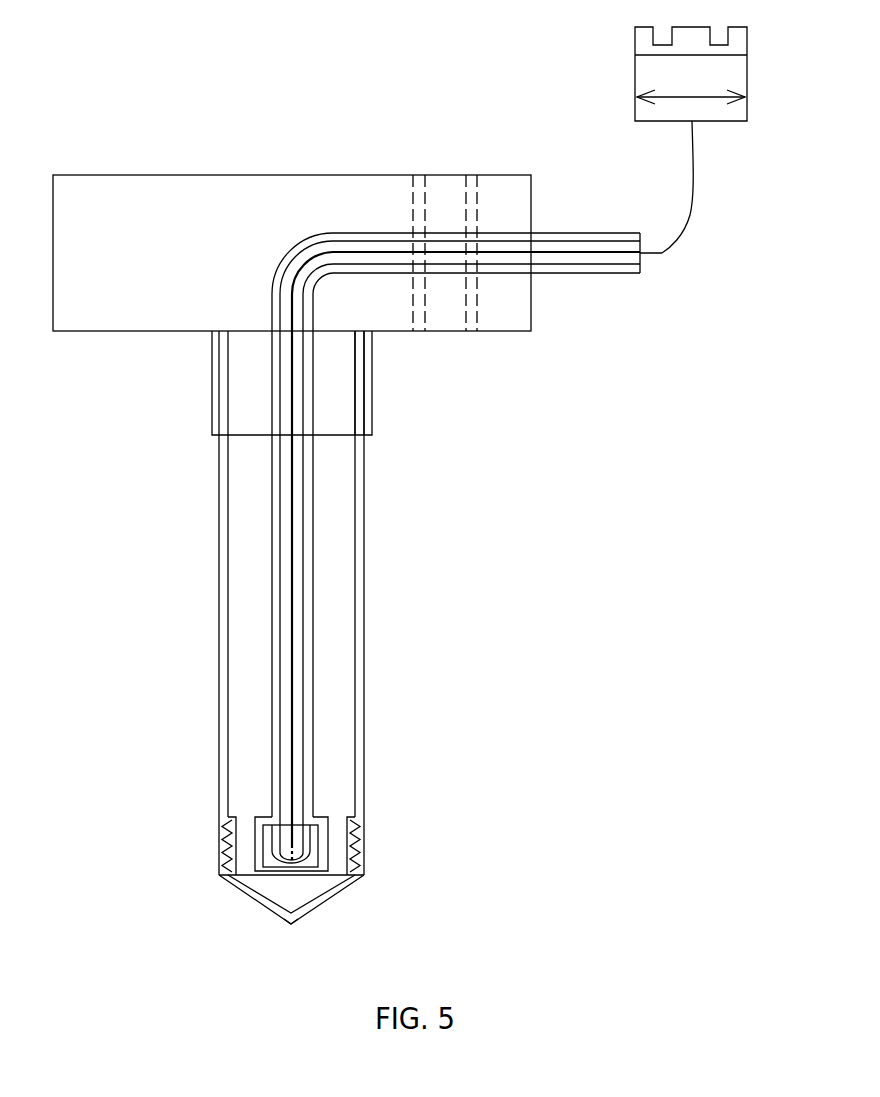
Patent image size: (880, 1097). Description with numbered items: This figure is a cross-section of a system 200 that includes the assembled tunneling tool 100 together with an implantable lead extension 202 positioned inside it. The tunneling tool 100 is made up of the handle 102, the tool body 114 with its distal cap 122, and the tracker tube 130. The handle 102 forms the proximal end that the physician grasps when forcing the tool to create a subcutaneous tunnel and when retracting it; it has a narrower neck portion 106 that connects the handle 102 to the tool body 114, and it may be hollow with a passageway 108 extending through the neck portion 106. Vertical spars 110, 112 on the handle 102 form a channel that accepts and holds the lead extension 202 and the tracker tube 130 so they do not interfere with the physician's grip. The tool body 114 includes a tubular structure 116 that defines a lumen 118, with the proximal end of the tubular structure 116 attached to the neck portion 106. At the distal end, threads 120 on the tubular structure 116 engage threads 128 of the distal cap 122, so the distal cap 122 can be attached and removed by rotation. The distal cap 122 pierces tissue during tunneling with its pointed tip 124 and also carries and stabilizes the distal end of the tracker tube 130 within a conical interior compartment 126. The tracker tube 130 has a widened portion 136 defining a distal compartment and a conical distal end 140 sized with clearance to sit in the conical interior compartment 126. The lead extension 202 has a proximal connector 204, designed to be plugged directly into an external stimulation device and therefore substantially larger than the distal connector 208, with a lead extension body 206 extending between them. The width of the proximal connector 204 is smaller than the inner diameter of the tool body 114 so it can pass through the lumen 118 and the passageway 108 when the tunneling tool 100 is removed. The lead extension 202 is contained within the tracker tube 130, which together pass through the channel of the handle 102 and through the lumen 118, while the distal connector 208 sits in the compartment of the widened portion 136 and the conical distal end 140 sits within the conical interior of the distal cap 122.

The tunneling tool 100 is at (188, 505).
The handle 102 is at (136, 175).
The neck portion 106 is at (373, 410).
The passageway 108 is at (363, 364).
The vertical spar 110 is at (413, 204).
The vertical spar 112 is at (477, 204).
The tool body 114 is at (218, 512).
The tubular structure 116 is at (360, 525).
The lumen 118 is at (337, 455).
The threads 120 is at (357, 840).
The distal cap 122 is at (248, 895).
The pointed tip 124 is at (289, 924).
The conical interior compartment 126 is at (272, 908).
The threads 128 is at (227, 846).
The tracker tube 130 is at (268, 470).
The widened portion 136 is at (265, 840).
The conical distal end 140 is at (293, 898).
The system 200 is at (467, 613).
The lead extension 202 is at (662, 259).
The proximal connector 204 is at (718, 122).
The lead extension body 206 is at (694, 206).
The distal connector 208 is at (296, 864).